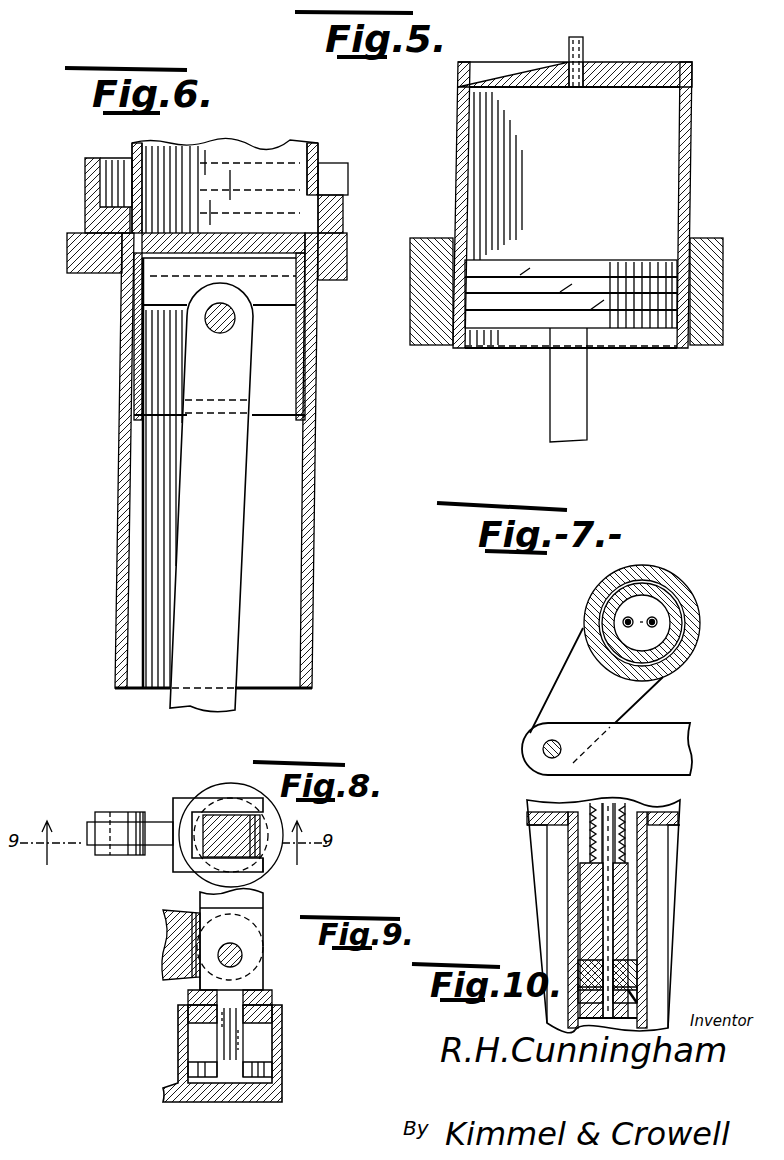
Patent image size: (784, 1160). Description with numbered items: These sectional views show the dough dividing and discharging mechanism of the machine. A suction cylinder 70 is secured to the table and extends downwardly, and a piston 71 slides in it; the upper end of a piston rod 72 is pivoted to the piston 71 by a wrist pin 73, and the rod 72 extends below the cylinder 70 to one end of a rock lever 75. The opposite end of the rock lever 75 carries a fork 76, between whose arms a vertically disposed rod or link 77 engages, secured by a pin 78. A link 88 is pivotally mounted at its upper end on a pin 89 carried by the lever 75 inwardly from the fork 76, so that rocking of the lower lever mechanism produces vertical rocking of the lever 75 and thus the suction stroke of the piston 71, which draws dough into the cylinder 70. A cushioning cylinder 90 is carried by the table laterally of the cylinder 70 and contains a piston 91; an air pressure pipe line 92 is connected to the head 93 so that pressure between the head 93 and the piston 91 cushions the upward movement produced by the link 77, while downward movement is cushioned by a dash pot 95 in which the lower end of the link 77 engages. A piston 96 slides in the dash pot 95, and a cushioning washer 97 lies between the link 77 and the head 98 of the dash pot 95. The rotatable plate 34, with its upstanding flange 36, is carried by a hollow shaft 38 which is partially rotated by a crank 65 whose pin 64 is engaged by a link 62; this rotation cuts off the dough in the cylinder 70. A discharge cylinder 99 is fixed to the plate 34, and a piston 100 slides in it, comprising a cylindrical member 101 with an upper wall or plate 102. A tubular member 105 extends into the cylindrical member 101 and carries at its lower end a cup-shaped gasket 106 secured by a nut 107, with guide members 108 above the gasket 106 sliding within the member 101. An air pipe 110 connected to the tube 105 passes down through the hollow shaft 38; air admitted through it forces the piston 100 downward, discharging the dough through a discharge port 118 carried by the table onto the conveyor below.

In FIG. 6, the rotatable plate 34 is at (350, 236).
In FIG. 6, the upstanding flange 36 is at (85, 168).
In FIG. 7, the hollow shaft 38 is at (678, 622).
In FIG. 7, the link 62 is at (668, 735).
In FIG. 7, the pin 64 is at (541, 748).
In FIG. 7, the crank 65 is at (557, 698).
In FIG. 6, the suction cylinder 70 is at (313, 460).
In FIG. 6, the piston 71 is at (285, 390).
In FIG. 6, the piston rod 72 is at (228, 552).
In FIG. 6, the wrist pin 73 is at (226, 310).
In FIG. 8, the rock lever 75 is at (92, 847).
In FIG. 9, the rock lever 75 is at (165, 942).
In FIG. 8, the fork 76 is at (180, 798).
In FIG. 9, the fork 76 is at (177, 983).
In FIG. 5, the rod or link 77 is at (548, 401).
In FIG. 8, the rod or link 77 is at (265, 815).
In FIG. 9, the rod or link 77 is at (255, 903).
In FIG. 8, the pin 78 is at (220, 812).
In FIG. 9, the pin 78 is at (244, 958).
In FIG. 8, the link 88 is at (99, 812).
In FIG. 8, the pin 89 is at (136, 812).
In FIG. 5, the cushioning cylinder 90 is at (693, 197).
In FIG. 5, the piston 91 is at (613, 258).
In FIG. 5, the air pressure pipe line 92 is at (568, 41).
In FIG. 5, the head 93 is at (648, 68).
In FIG. 8, the dash pot 95 is at (272, 862).
In FIG. 9, the dash pot 95 is at (284, 1073).
In FIG. 9, the piston 96 is at (215, 1080).
In FIG. 9, the cushioning washer 97 is at (274, 998).
In FIG. 9, the head 98 is at (262, 1025).
In FIG. 6, the discharge cylinder 99 is at (320, 153).
In FIG. 10, the piston 100 is at (539, 886).
In FIG. 10, the tubular or cylindrical member 101 is at (648, 886).
In FIG. 10, the upper wall or plate 102 is at (678, 832).
In FIG. 10, the tubular member 105 is at (620, 812).
In FIG. 10, the cup-shaped gasket 106 is at (640, 973).
In FIG. 10, the nut 107 is at (640, 1001).
In FIG. 10, the guide members 108 is at (626, 925).
In FIG. 7, the air pipe 110 is at (654, 616).
In FIG. 5, the discharge port 118 is at (710, 247).